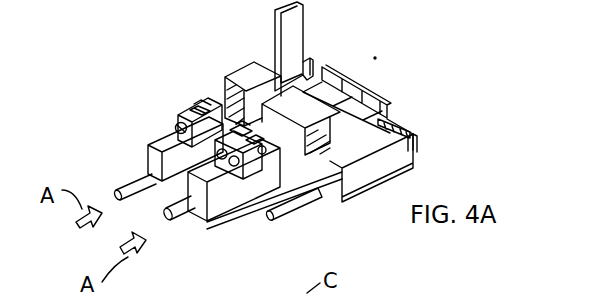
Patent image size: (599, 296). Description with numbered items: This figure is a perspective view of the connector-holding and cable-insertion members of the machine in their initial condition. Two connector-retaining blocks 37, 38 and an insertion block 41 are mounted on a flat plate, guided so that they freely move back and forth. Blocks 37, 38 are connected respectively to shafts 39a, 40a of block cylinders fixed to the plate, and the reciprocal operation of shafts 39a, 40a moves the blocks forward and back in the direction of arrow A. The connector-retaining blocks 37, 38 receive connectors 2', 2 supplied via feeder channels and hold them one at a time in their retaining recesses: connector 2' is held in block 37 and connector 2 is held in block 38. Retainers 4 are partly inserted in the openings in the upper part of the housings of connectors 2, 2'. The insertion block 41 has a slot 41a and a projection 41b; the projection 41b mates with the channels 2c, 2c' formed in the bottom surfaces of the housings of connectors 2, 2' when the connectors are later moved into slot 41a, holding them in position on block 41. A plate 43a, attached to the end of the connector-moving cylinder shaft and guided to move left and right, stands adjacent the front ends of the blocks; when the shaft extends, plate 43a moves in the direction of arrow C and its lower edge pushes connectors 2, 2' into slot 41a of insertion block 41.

The connector 2 is at (182, 107).
The connector 2' is at (241, 194).
The channel 2c is at (250, 79).
The channel 2c' is at (305, 168).
The retainer 4 is at (195, 102).
The connector-retaining block 37 is at (228, 193).
The connector-retaining block 38 is at (160, 146).
The shaft 39a is at (184, 222).
The shaft 40a is at (130, 188).
The insertion block 41 is at (370, 165).
The slot 41a is at (412, 148).
The projection 41b is at (400, 128).
The plate 43a is at (300, 23).